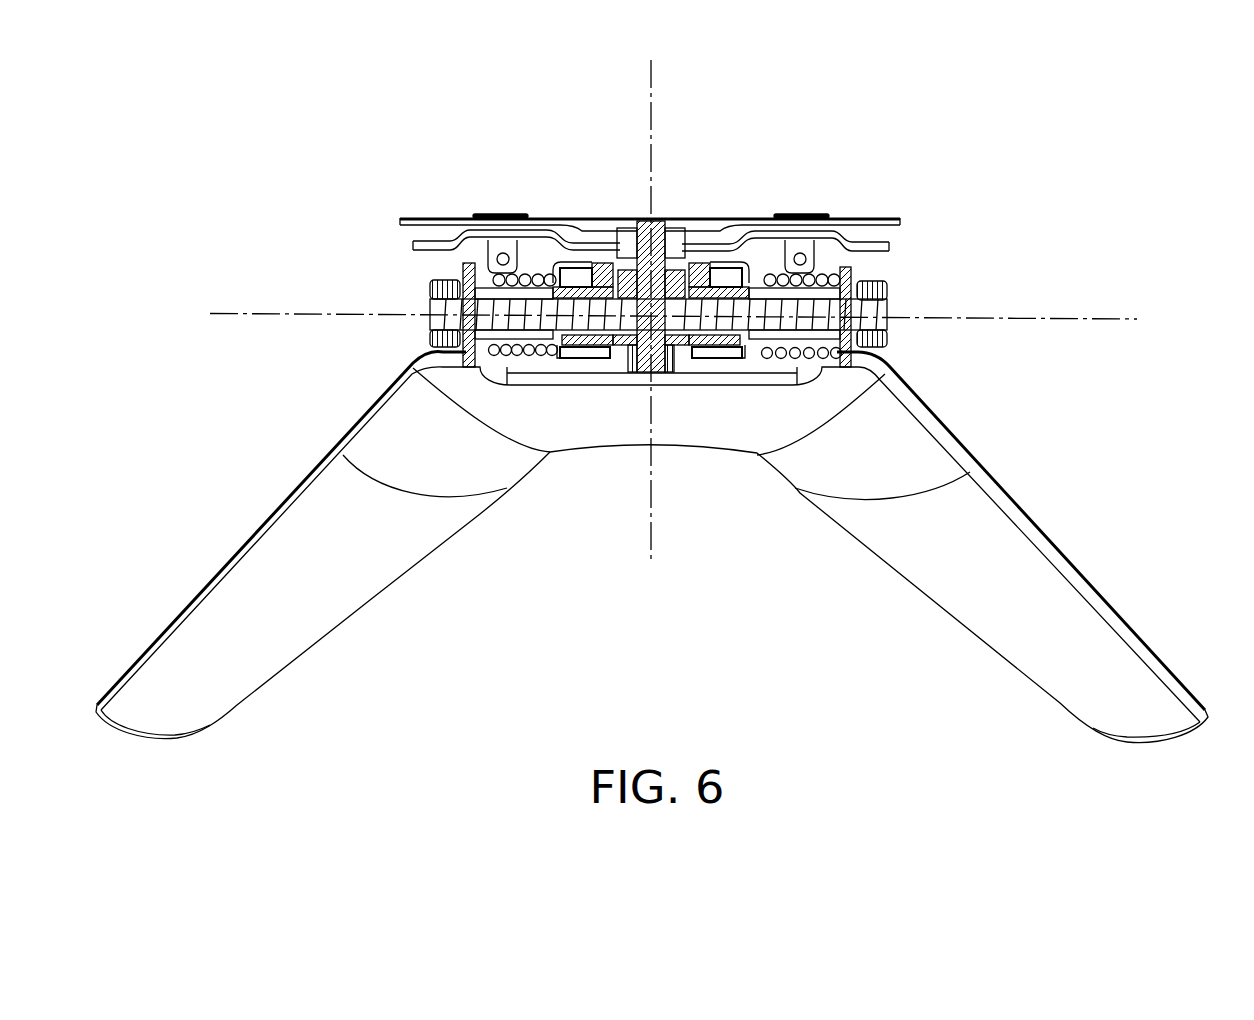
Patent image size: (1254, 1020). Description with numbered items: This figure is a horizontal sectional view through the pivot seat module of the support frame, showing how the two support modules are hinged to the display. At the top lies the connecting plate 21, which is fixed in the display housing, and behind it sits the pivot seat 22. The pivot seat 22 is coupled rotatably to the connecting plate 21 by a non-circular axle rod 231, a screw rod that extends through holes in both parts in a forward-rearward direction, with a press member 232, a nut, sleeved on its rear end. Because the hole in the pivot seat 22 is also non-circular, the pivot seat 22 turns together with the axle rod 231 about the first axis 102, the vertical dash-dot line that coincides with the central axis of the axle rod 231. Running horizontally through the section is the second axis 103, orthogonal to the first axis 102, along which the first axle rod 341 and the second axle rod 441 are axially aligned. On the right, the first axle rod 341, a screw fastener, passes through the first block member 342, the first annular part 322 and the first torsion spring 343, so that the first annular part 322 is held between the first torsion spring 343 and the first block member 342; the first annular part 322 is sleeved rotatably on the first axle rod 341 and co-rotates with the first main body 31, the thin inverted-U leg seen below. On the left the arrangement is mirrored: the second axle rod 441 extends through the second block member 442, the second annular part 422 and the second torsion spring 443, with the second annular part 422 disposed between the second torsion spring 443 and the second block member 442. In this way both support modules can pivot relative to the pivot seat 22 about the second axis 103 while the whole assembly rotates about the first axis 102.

The first axis 102 is at (651, 88).
The second axis 103 is at (1127, 318).
The connecting plate 21 is at (888, 218).
The pivot seat 22 is at (891, 248).
The axle rod 231 is at (643, 225).
The press member 232 is at (673, 373).
The first main body 31 is at (1017, 570).
The first axle rod 341 is at (877, 313).
The first block member 342 is at (692, 262).
The first torsion spring 343 is at (787, 352).
The first annular part 322 is at (721, 357).
The second axle rod 441 is at (447, 320).
The second block member 442 is at (606, 263).
The second torsion spring 443 is at (527, 358).
The second annular part 422 is at (582, 356).